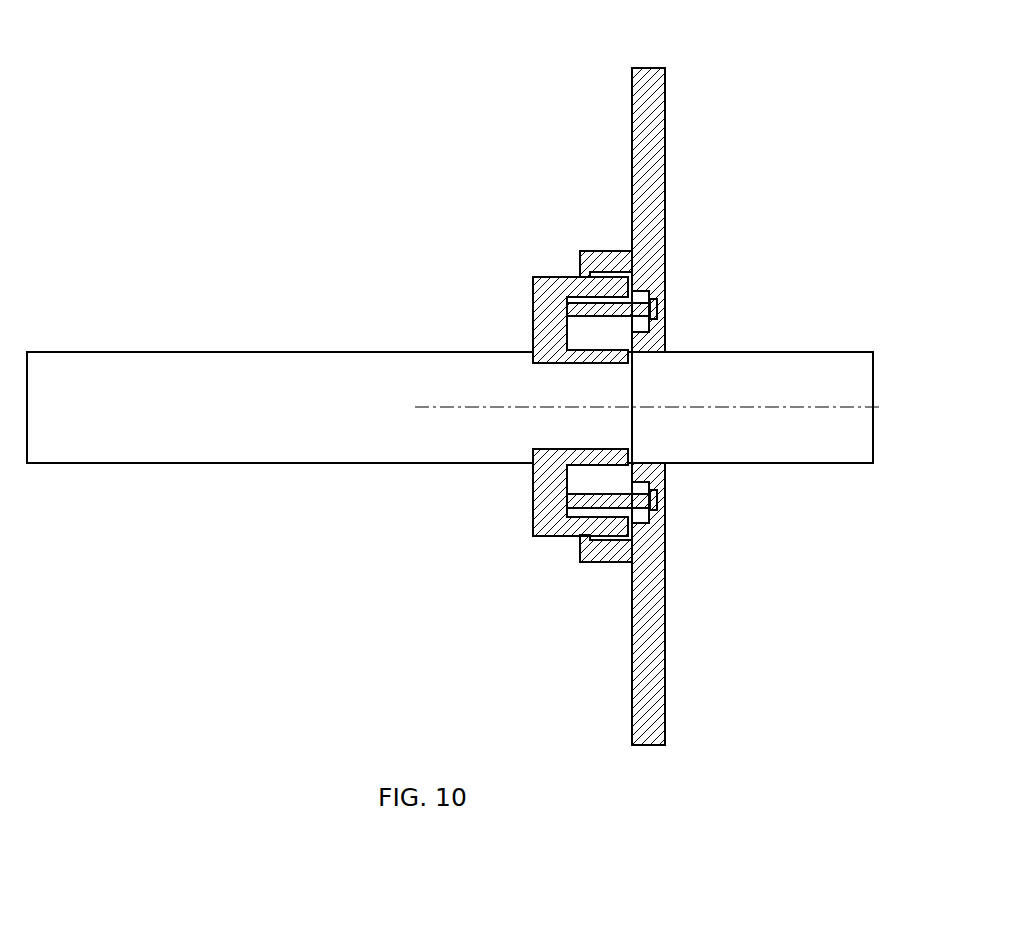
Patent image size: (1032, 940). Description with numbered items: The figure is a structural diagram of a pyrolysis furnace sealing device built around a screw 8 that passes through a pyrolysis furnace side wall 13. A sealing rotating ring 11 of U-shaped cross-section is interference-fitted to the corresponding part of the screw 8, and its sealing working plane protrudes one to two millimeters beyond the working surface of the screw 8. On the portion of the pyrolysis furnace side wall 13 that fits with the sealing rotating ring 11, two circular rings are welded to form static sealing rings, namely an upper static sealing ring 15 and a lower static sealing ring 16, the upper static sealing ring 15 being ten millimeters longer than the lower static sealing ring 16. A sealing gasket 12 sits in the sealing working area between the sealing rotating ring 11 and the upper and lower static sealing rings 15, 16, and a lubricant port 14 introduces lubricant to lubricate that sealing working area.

The screw 8 is at (268, 383).
The sealing rotating ring 11 is at (531, 296).
The sealing gasket 12 is at (610, 293).
The pyrolysis furnace side wall 13 is at (620, 243).
The lubricant port 14 is at (660, 298).
The upper static sealing ring 15 is at (565, 494).
The lower static sealing ring 16 is at (578, 557).